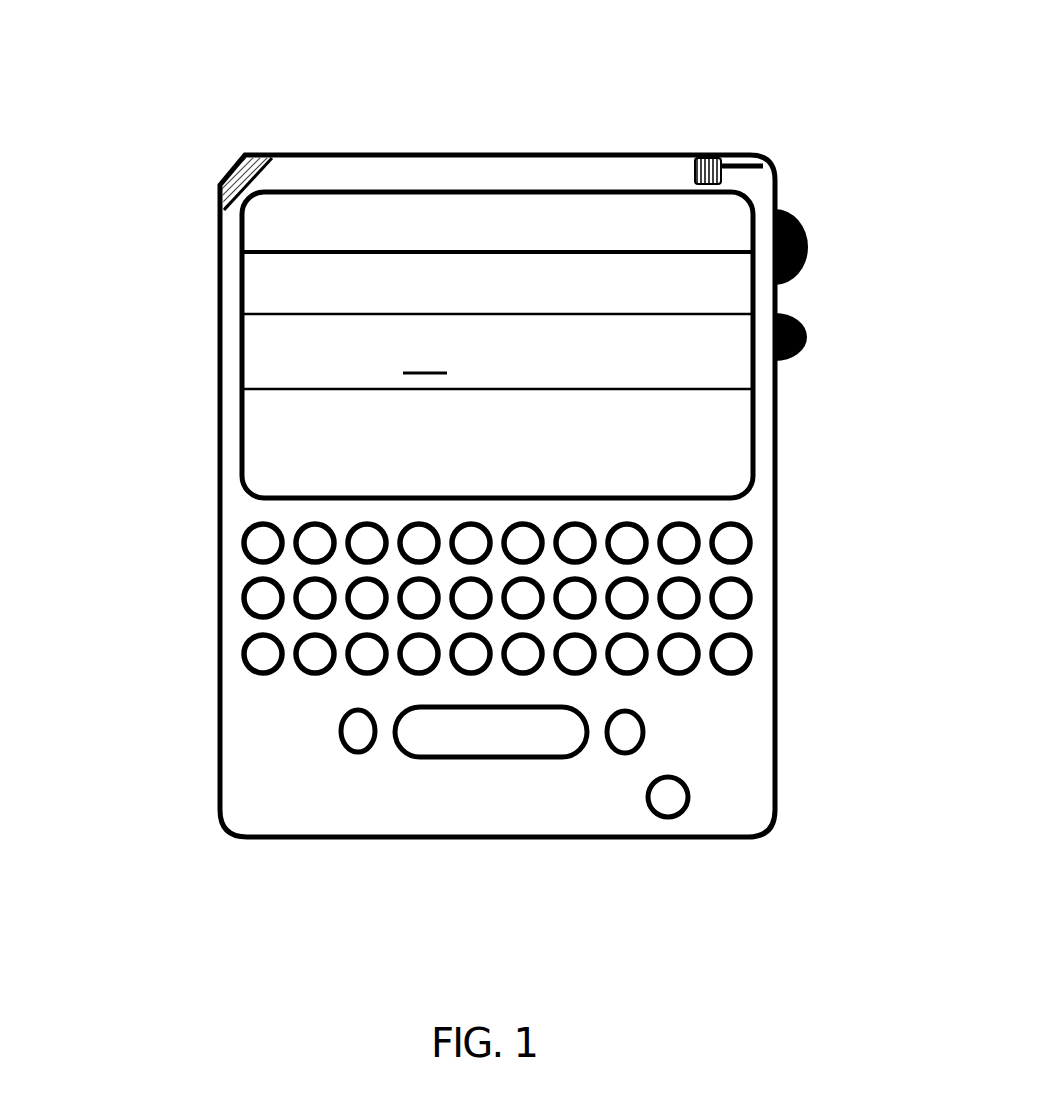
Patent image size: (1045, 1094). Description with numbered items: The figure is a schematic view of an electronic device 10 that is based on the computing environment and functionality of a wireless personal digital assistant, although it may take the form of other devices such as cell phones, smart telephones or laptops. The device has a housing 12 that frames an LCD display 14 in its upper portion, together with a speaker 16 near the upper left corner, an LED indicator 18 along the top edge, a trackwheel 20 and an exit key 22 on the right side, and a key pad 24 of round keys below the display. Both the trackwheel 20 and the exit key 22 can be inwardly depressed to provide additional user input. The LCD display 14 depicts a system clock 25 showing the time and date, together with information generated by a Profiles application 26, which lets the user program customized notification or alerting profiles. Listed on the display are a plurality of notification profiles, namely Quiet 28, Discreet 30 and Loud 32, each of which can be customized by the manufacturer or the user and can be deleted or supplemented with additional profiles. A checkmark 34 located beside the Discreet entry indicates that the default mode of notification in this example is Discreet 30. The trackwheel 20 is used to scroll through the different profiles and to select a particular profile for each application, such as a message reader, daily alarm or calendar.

The electronic device 10 is at (485, 423).
The housing 12 is at (268, 745).
The LCD display 14 is at (236, 492).
The speaker 16 is at (227, 170).
The LED indicator 18 is at (773, 169).
The trackwheel 20 is at (808, 248).
The exit key 22 is at (808, 335).
The key pad 24 is at (766, 595).
The system clock 25 is at (290, 213).
The Profiles application 26 is at (634, 200).
The Quiet profile 28 is at (265, 292).
The Discreet profile 30 is at (265, 352).
The Loud profile 32 is at (258, 418).
The checkmark 34 is at (416, 360).